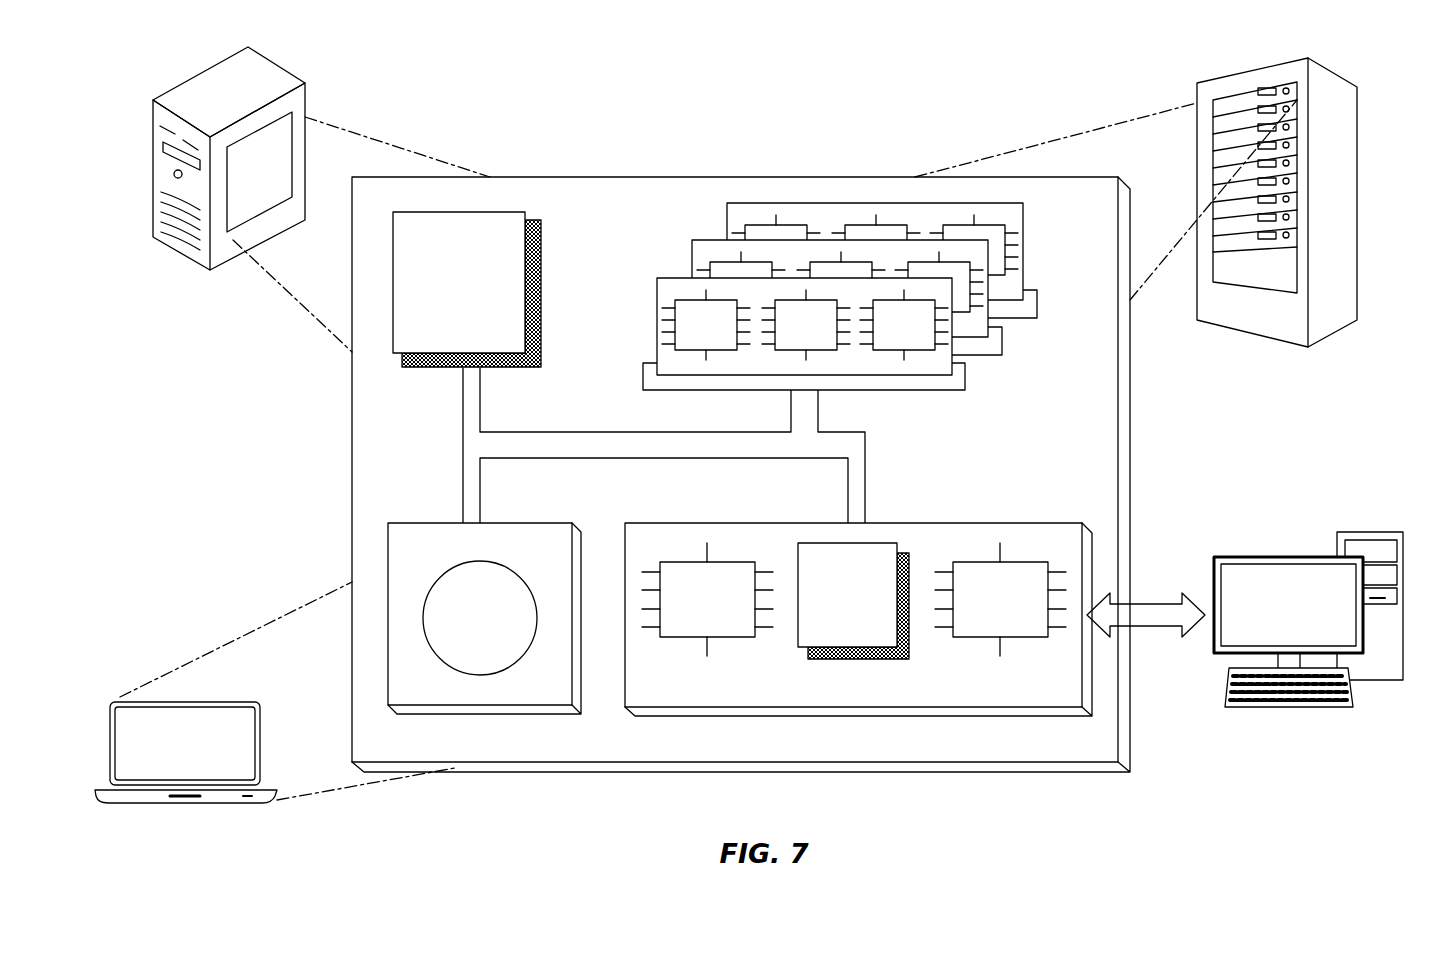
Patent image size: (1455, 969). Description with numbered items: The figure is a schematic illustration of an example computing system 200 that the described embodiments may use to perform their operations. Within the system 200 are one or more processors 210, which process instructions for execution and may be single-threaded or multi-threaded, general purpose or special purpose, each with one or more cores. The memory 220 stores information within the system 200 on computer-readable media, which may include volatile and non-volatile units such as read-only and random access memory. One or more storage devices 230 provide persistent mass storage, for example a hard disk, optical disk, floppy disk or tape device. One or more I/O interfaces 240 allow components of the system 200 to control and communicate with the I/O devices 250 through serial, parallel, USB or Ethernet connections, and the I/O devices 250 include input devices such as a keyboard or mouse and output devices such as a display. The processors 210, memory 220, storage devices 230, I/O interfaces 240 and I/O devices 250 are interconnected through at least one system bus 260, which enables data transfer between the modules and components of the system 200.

The computing system 200 is at (824, 60).
The processor 210 is at (453, 212).
The memory 220 is at (1020, 360).
The storage device 230 is at (503, 523).
The I/O interface 240 is at (935, 523).
The I/O device 250 is at (1336, 507).
The system bus 260 is at (634, 432).